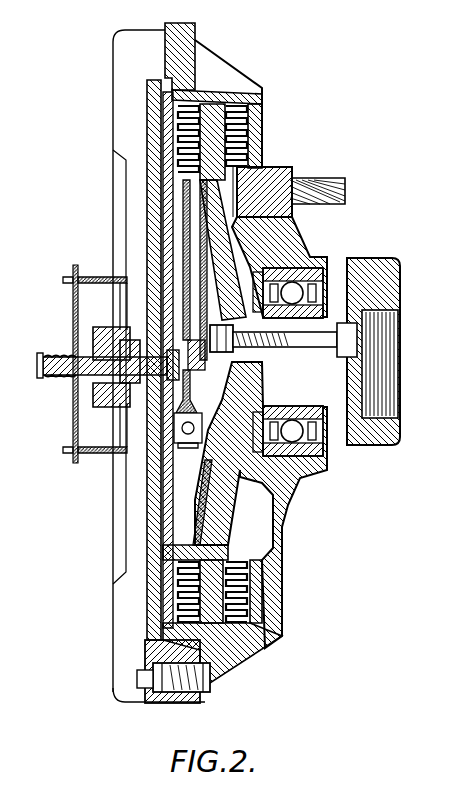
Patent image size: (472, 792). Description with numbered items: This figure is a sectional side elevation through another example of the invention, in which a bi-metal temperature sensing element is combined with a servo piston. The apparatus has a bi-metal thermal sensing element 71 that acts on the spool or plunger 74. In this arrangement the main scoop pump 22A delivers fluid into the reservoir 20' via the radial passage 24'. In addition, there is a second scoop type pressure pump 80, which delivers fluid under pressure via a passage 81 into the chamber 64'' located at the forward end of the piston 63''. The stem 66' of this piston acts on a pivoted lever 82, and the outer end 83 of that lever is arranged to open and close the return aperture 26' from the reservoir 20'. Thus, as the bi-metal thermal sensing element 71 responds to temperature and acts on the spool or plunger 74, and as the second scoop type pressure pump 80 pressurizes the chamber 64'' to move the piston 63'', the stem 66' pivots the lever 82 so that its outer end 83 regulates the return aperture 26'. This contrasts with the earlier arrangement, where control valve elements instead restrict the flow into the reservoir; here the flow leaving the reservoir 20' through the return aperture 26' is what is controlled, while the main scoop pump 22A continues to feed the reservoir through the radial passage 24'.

The second scoop type pressure pump 80 is at (162, 88).
The passage 81 is at (160, 158).
The outer end of the pivoted lever 83 is at (186, 200).
The pivoted lever 82 is at (200, 232).
The return aperture 26' is at (285, 210).
The chamber 64'' is at (84, 318).
The spool or plunger 74 is at (92, 360).
The bi-metal thermal sensing element 71 is at (73, 382).
The piston 63'' is at (83, 418).
The stem of the piston 66' is at (131, 393).
The reservoir 20' is at (245, 344).
The radial passage 24' is at (126, 360).
The main scoop pump 22A is at (170, 634).